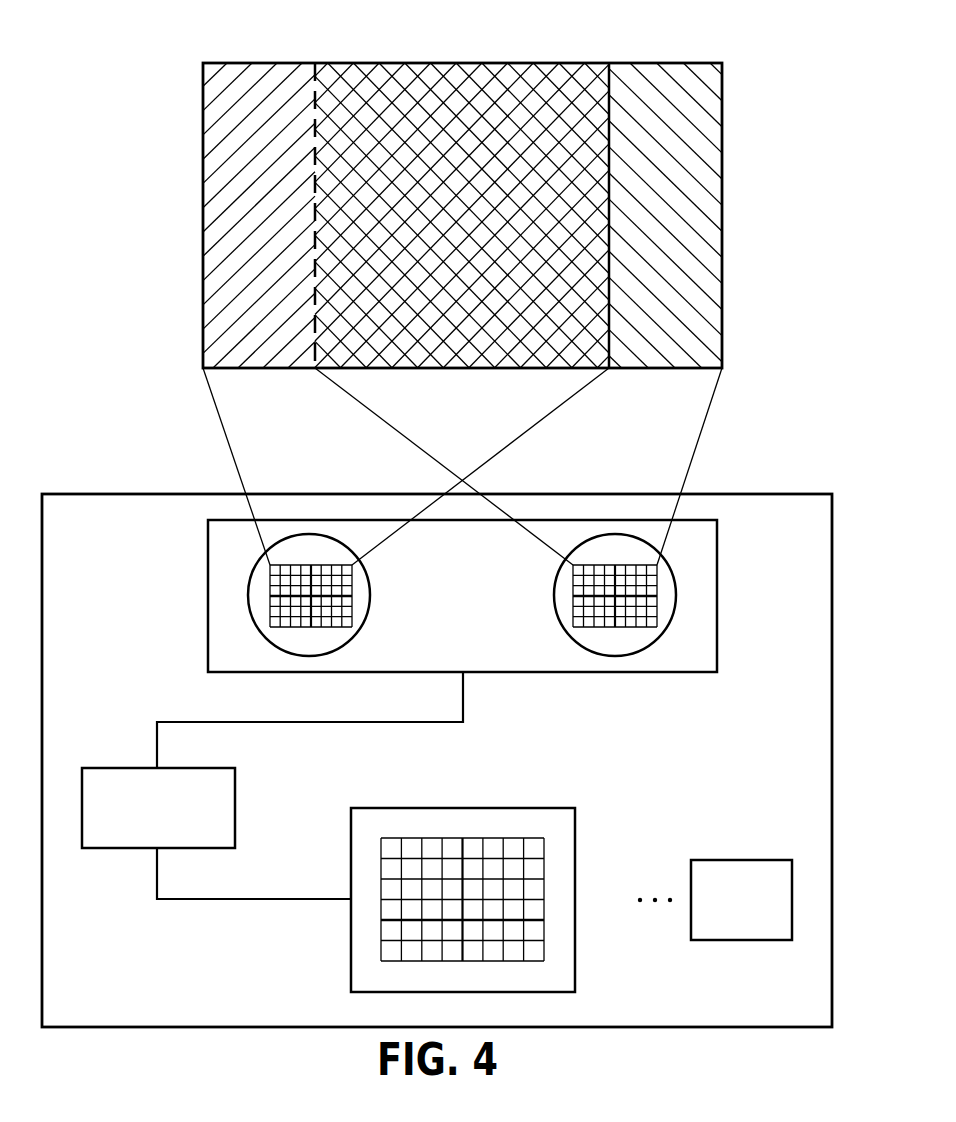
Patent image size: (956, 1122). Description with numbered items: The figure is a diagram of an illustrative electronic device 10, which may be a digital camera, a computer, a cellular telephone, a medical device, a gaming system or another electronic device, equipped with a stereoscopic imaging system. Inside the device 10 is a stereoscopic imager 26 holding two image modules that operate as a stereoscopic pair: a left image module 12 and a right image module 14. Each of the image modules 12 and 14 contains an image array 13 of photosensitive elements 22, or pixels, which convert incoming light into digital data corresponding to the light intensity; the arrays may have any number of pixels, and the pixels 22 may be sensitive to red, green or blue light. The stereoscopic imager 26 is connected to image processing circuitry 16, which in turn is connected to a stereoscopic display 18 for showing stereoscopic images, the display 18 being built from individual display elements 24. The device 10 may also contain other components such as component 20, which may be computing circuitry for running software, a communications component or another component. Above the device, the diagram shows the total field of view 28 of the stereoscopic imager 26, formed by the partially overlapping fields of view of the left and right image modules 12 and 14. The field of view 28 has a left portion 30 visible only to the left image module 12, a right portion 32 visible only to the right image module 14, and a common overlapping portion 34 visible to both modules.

The electronic device 10 is at (92, 452).
The left image module 12 is at (252, 575).
The image array 13 is at (352, 585).
The right image module 14 is at (672, 580).
The image processing circuitry 16 is at (108, 845).
The stereoscopic display 18 is at (570, 860).
The component 20 is at (757, 862).
The photosensitive elements 22 is at (335, 600).
The display elements 24 is at (535, 908).
The stereoscopic imager 26 is at (677, 668).
The field of view 28 is at (461, 187).
The left portion 30 is at (208, 202).
The right portion 32 is at (718, 202).
The common overlapping portion 34 is at (560, 63).